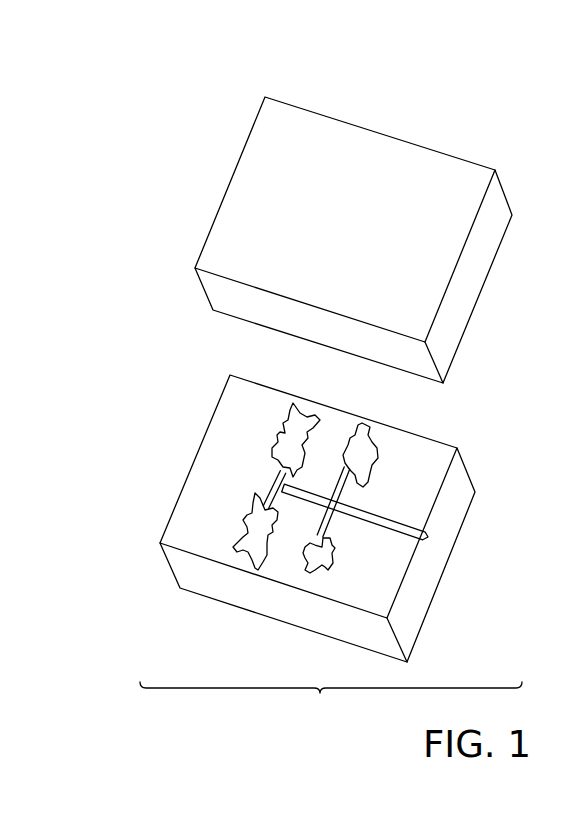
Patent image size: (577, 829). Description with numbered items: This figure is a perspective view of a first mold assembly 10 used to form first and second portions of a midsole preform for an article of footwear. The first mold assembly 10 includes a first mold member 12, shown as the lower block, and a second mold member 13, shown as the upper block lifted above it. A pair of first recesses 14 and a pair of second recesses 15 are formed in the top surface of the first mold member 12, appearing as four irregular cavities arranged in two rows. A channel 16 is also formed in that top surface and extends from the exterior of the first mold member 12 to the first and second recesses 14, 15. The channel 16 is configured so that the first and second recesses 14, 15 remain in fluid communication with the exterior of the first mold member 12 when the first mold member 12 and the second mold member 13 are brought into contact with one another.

The first mold assembly 10 is at (470, 403).
The first mold member 12 is at (238, 422).
The second mold member 13 is at (332, 234).
The first recesses 14 is at (368, 452).
The second recesses 15 is at (278, 440).
The channel 16 is at (370, 515).